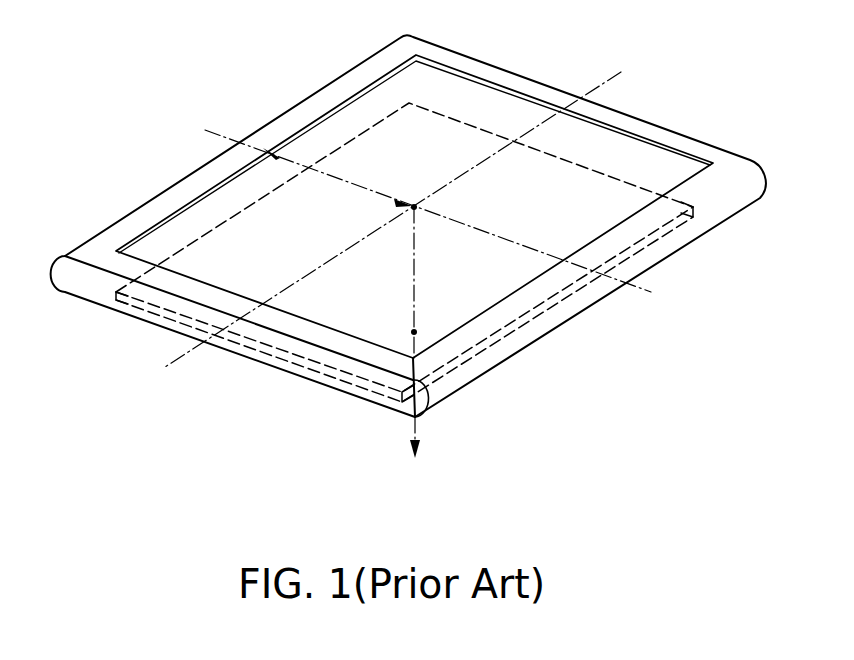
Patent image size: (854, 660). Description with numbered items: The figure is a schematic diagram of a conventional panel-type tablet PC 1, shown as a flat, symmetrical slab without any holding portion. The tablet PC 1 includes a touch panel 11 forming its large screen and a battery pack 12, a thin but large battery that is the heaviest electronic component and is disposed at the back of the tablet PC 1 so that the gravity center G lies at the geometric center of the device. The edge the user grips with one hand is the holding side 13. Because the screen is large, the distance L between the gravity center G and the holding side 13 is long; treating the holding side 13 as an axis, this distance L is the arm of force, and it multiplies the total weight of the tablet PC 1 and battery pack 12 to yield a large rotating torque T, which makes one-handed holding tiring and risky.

The tablet PC 1 is at (112, 40).
The touch panel 11 is at (641, 157).
The battery pack 12 is at (290, 369).
The holding side 13 is at (316, 88).